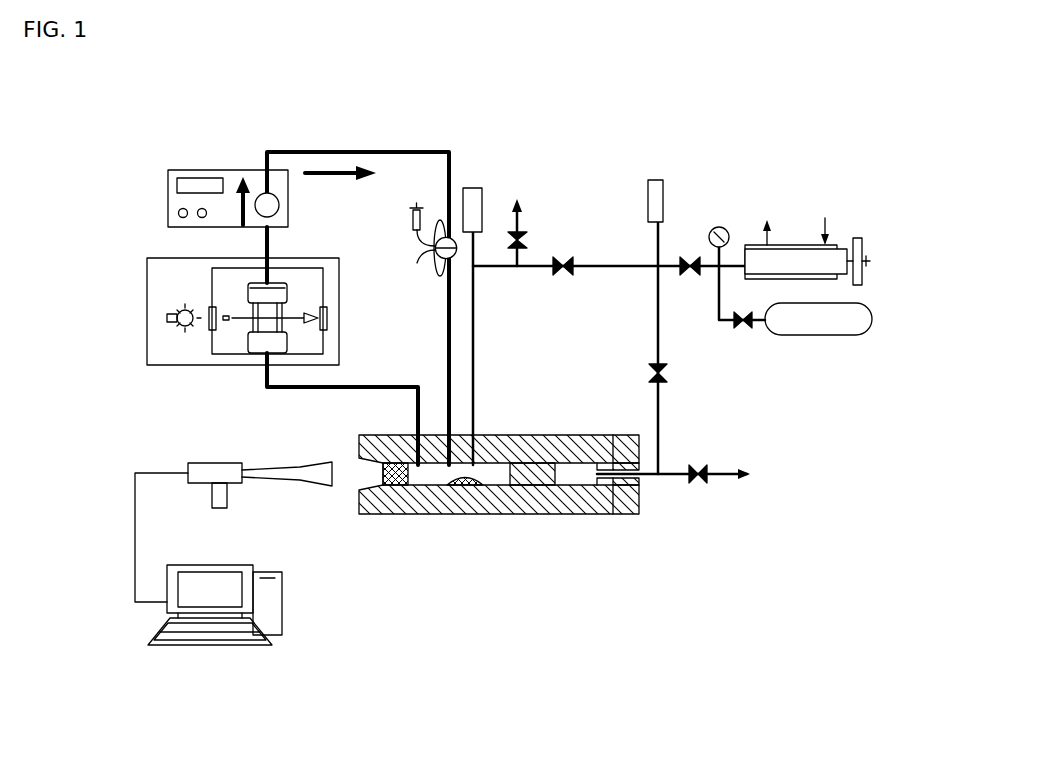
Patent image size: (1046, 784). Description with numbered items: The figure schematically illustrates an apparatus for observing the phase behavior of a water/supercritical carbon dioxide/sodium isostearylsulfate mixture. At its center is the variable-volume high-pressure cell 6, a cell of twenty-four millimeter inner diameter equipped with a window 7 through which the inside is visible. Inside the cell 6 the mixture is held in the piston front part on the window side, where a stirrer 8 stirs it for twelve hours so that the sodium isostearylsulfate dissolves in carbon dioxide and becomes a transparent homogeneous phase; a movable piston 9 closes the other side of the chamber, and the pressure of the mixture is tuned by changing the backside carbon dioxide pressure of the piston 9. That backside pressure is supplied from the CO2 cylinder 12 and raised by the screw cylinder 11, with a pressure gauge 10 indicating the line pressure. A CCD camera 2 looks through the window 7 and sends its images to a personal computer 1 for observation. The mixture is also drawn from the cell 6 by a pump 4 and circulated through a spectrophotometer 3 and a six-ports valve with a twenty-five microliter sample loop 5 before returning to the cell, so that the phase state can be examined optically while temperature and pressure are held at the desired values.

The personal computer 1 is at (213, 643).
The CCD camera 2 is at (211, 458).
The spectrophotometer 3 is at (164, 250).
The pump 4 is at (216, 159).
The six-ports valve with 25 μL sample loop 5 is at (458, 228).
The variable-volume high-pressure cell 6 is at (566, 519).
The window 7 is at (399, 486).
The stirrer 8 is at (487, 473).
The movable piston 9 is at (545, 467).
The pressure gauge 10 is at (497, 192).
The screw cylinder 11 is at (842, 237).
The CO2 cylinder 12 is at (827, 341).